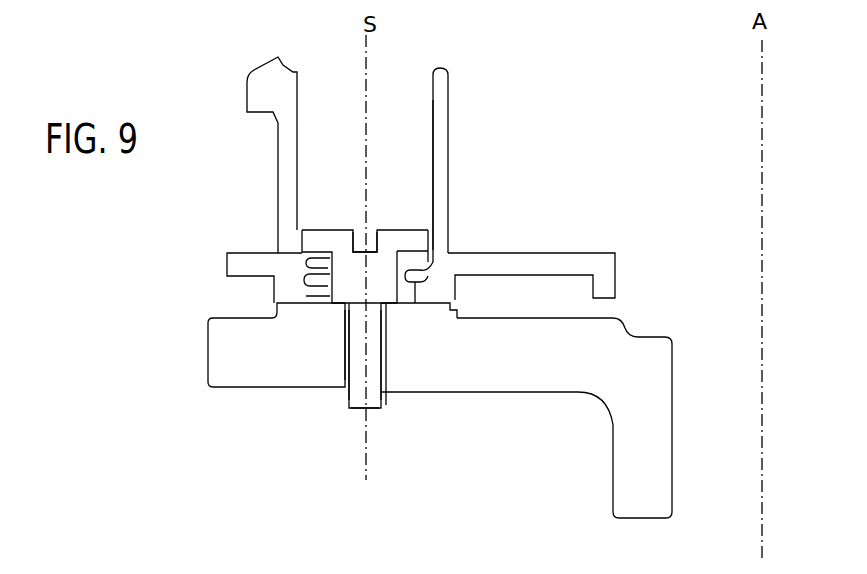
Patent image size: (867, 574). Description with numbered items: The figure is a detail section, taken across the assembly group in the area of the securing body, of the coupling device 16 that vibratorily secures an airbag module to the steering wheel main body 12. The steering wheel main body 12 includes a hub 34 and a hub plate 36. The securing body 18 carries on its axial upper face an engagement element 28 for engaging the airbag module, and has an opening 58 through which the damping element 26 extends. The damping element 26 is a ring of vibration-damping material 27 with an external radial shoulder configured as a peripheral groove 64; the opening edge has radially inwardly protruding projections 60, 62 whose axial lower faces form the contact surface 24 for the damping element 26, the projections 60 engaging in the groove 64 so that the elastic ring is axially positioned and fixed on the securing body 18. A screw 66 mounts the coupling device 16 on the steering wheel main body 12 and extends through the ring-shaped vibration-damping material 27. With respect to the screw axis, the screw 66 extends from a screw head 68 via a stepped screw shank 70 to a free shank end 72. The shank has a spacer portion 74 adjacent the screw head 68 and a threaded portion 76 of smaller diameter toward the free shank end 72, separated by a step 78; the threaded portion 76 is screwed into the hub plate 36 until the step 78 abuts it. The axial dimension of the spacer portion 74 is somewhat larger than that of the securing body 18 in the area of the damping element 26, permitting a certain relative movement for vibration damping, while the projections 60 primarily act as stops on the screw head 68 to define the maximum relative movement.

The steering wheel main body 12 is at (208, 409).
The coupling device 16 is at (540, 130).
The securing body 18 is at (466, 368).
The contact surface 24 is at (304, 285).
The damping element 26 is at (401, 310).
The vibration-damping material 27 is at (314, 297).
The engagement element 28 is at (270, 95).
The hub 34 is at (652, 485).
The hub plate 36 is at (238, 352).
The opening 58 is at (386, 182).
The projections 60 is at (432, 273).
The projections 62 is at (312, 260).
The peripheral groove 64 is at (314, 280).
The screw 66 is at (391, 208).
The screw head 68 is at (415, 242).
The screw shank 70 is at (357, 392).
The free shank end 72 is at (376, 418).
The spacer portion 74 is at (352, 278).
The threaded portion 76 is at (357, 342).
The step 78 is at (335, 305).